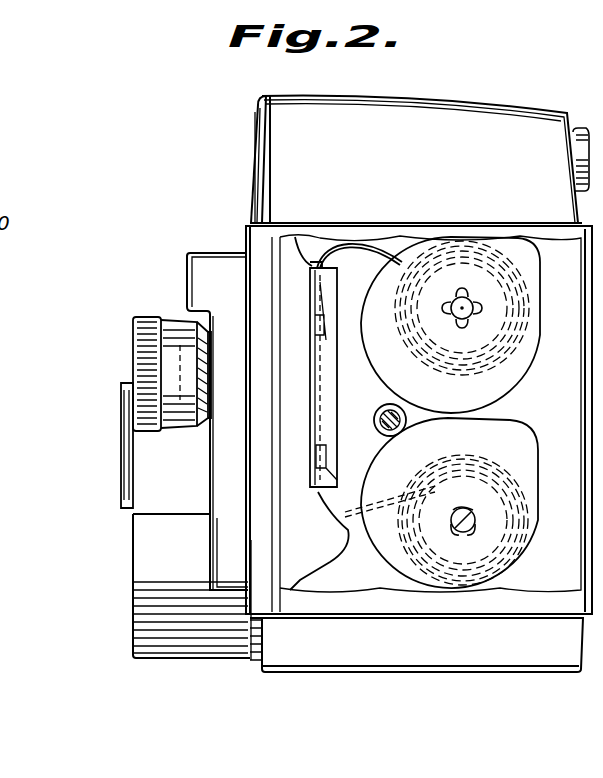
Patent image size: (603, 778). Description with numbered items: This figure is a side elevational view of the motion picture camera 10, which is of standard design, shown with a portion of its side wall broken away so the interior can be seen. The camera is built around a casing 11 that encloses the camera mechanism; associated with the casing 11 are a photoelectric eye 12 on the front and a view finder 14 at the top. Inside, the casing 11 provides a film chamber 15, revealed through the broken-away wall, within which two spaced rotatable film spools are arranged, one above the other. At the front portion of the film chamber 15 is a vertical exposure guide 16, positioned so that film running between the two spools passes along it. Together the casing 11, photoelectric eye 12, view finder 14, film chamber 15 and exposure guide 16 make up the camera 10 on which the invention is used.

The motion picture camera 10 is at (116, 520).
The casing 11 is at (190, 272).
The photoelectric eye 12 is at (121, 466).
The view finder 14 is at (255, 151).
The film chamber 15 is at (374, 396).
The vertical exposure guide 16 is at (343, 419).